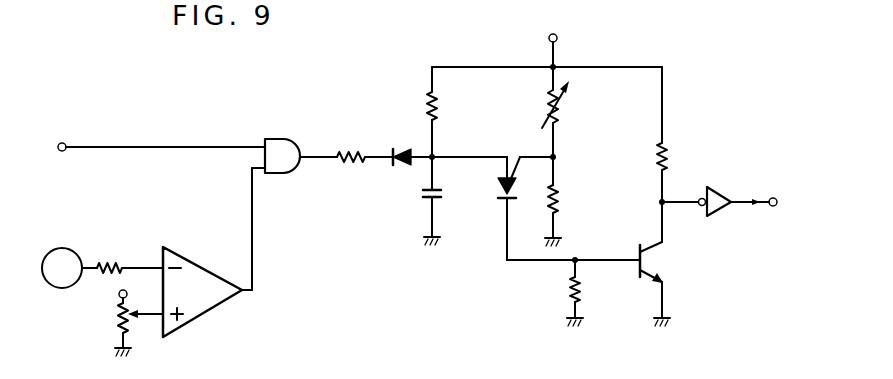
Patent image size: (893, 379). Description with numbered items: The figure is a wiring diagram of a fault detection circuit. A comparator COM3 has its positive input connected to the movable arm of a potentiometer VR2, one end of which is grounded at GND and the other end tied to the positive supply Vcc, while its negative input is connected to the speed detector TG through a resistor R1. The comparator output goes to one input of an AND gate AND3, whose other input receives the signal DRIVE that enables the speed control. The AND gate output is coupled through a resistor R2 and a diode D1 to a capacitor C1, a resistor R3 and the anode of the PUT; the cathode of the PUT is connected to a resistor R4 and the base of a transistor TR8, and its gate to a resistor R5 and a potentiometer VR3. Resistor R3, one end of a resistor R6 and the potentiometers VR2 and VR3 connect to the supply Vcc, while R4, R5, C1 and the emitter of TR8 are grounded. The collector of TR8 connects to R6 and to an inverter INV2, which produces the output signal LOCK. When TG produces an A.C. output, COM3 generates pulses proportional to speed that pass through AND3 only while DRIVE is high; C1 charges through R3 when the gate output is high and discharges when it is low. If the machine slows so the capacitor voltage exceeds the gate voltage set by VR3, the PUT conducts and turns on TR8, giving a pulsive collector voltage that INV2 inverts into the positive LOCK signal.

The DRIVE signal DRIVE is at (92, 136).
The AND gate AND3 is at (281, 139).
The resistor R2 is at (351, 152).
The diode D1 is at (402, 150).
The resistor R3 is at (440, 104).
The capacitor C1 is at (442, 196).
The programmable unijunction transistor PUT is at (509, 170).
The power supply Vcc is at (555, 26).
The potentiometer VR3 is at (561, 106).
The resistor R5 is at (560, 198).
The resistor R4 is at (582, 288).
The resistor R6 is at (655, 152).
The transistor TR8 is at (652, 262).
The ground GND is at (699, 323).
The inverter INV2 is at (716, 186).
The LOCK signal LOCK is at (771, 228).
The speed detector TG is at (62, 268).
The resistor R1 is at (116, 263).
The comparator COM3 is at (208, 267).
The potentiometer VR2 is at (115, 321).